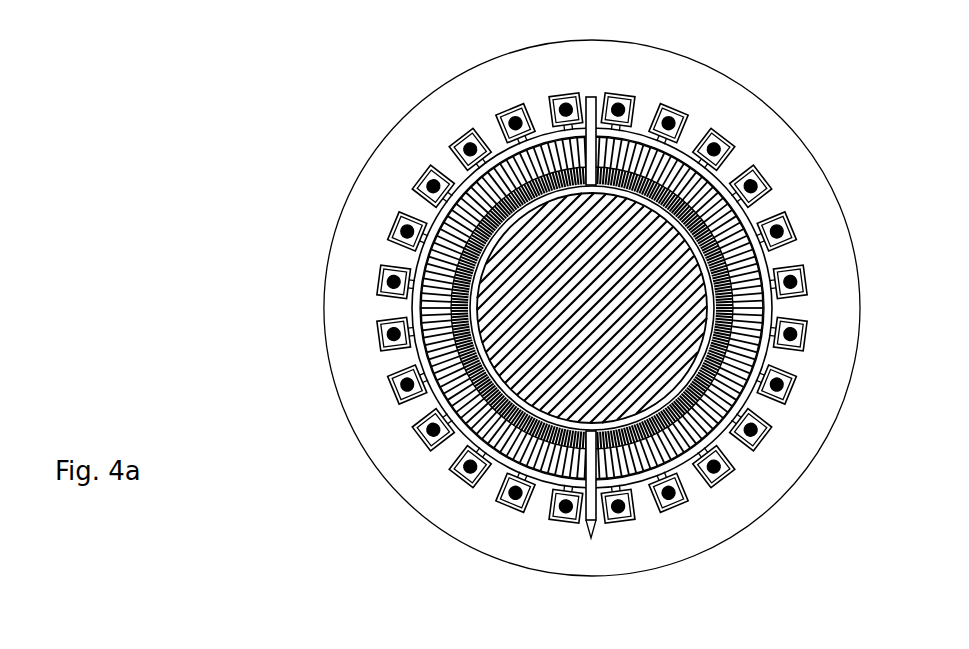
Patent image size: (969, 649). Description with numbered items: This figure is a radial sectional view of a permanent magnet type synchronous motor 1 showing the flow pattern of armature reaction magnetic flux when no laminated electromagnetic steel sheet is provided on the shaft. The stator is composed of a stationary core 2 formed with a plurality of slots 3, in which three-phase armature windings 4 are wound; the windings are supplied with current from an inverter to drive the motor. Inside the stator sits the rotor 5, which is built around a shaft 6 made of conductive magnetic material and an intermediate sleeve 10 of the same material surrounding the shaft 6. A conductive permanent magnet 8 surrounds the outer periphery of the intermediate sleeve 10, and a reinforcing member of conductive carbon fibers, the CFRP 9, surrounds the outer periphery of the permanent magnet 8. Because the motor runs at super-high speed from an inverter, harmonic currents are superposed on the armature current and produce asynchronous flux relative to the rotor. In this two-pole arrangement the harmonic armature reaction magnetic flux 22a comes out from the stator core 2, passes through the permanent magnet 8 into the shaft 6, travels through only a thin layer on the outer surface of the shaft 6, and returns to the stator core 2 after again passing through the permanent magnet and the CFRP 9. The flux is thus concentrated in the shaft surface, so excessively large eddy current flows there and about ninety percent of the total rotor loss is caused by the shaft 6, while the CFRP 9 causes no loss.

The permanent magnet type synchronous motor 1 is at (748, 90).
The stationary core 2 is at (767, 148).
The slots 3 is at (663, 118).
The armature windings 4 is at (615, 98).
The rotor 5 is at (745, 393).
The shaft 6 is at (500, 463).
The permanent magnet 8 is at (447, 385).
The CFRP 9 is at (432, 342).
The intermediate sleeve 10 is at (592, 308).
The harmonic armature reaction magnetic flux 22a is at (593, 540).